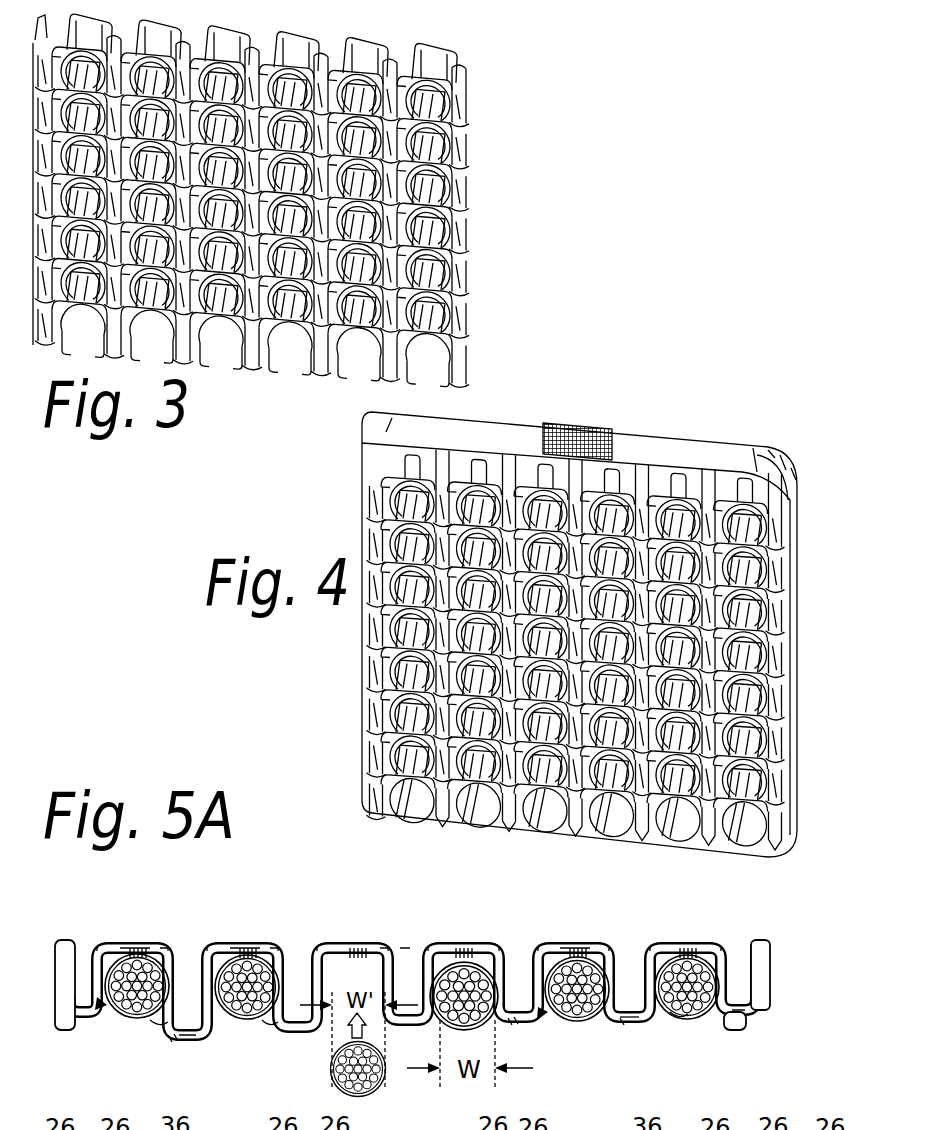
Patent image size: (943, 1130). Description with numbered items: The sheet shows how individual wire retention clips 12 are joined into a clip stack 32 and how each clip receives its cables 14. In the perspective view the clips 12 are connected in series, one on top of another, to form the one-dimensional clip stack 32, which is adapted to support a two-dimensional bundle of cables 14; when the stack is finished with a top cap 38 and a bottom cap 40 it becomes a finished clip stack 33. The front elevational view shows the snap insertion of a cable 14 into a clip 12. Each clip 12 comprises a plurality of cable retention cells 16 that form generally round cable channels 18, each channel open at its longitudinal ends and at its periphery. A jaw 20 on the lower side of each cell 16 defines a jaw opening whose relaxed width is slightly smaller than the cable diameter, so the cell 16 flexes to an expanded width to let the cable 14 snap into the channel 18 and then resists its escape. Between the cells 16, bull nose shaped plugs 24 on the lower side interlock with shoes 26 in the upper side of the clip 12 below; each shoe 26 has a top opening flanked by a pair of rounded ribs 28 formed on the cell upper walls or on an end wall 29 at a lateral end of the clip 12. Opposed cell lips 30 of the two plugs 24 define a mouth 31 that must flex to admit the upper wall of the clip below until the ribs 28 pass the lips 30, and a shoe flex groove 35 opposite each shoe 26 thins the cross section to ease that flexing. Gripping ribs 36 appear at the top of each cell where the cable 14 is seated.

In FIG. 3, the wire retention clip 12 is at (468, 337).
In FIG. 4, the wire retention clip 12 is at (807, 640).
In FIG. 5A, the wire retention clip 12 is at (780, 978).
In FIG. 5A, the cable 14 is at (331, 1073).
In FIG. 5A, the cable retention cell 16 is at (112, 943).
In FIG. 5A, the cable channel 18 is at (93, 1010).
In FIG. 5A, the jaw 20 is at (153, 1017).
In FIG. 5A, the bull nose shaped plug 24 is at (185, 1043).
In FIG. 5A, the shoe 26 is at (187, 960).
In FIG. 5A, the rounded rib 28 is at (107, 943).
In FIG. 5A, the end wall 29 is at (58, 962).
In FIG. 5A, the cell lip 30 is at (170, 1030).
In FIG. 5A, the mouth 31 is at (593, 1043).
In FIG. 3, the clip stack 32 is at (505, 60).
In FIG. 4, the finished clip stack 33 is at (340, 490).
In FIG. 5A, the shoe flex groove 35 is at (742, 1033).
In FIG. 5A, the gripping ribs 36 is at (132, 943).
In FIG. 4, the top cap 38 is at (706, 452).
In FIG. 4, the bottom cap 40 is at (465, 827).